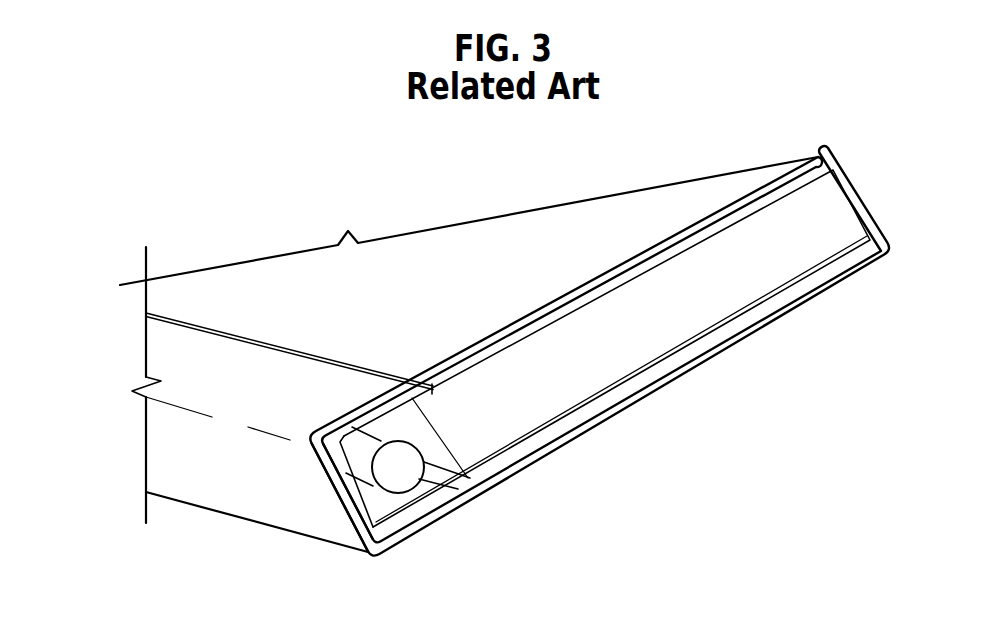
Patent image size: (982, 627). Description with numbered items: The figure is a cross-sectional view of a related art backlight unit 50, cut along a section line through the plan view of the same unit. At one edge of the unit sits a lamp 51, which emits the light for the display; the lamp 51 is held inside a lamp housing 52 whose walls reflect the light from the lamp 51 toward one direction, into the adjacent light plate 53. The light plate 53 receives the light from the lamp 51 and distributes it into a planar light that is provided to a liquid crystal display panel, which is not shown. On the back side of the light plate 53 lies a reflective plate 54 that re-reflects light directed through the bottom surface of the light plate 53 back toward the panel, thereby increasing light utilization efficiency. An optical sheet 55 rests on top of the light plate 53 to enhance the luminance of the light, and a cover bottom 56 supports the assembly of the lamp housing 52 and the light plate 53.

The backlight unit 50 is at (583, 372).
The lamp 51 is at (400, 479).
The lamp housing 52 is at (350, 497).
The light plate 53 is at (663, 350).
The reflective plate 54 is at (547, 437).
The optical sheet 55 is at (483, 237).
The cover bottom 56 is at (165, 348).